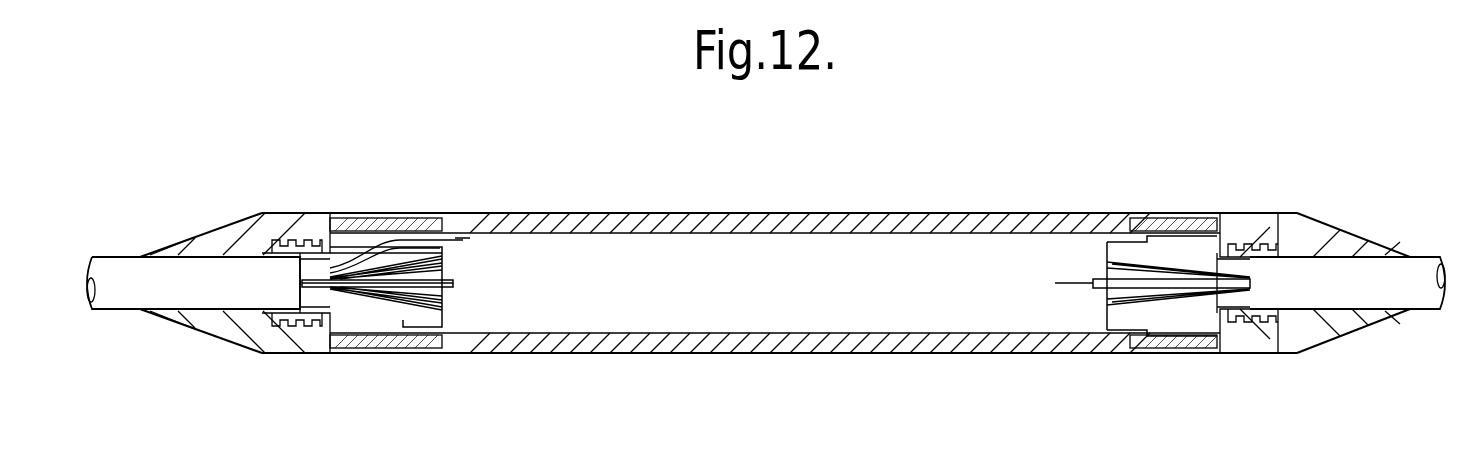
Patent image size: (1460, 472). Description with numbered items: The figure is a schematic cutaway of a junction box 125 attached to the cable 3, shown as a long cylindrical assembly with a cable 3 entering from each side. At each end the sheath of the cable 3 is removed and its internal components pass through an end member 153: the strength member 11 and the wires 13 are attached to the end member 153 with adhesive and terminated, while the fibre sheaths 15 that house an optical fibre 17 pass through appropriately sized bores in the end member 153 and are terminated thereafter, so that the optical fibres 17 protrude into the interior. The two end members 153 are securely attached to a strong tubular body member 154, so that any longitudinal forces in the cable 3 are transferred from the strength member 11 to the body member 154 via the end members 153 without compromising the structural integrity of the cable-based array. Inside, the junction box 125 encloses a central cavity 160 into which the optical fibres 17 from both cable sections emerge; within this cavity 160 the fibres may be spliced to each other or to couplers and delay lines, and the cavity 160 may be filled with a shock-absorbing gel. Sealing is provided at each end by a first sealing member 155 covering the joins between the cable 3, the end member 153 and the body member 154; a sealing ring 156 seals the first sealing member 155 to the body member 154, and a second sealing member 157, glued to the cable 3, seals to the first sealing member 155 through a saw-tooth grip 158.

The junction box 125 is at (560, 140).
The cable 3 is at (121, 255).
The fibre sheaths 15 is at (477, 237).
The optical fibre 17 is at (457, 281).
The strength member 11 is at (453, 289).
The wires 13 is at (447, 301).
The end member 153 is at (453, 322).
The tubular body member 154 is at (757, 354).
The central cavity 160 is at (805, 258).
The first sealing member 155 is at (1163, 213).
The sealing ring 156 is at (1108, 352).
The saw-tooth grip 158 is at (1253, 240).
The second sealing member 157 is at (1280, 215).